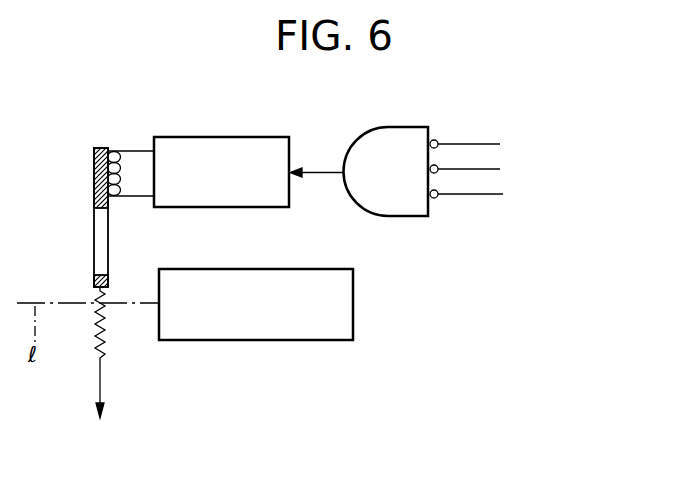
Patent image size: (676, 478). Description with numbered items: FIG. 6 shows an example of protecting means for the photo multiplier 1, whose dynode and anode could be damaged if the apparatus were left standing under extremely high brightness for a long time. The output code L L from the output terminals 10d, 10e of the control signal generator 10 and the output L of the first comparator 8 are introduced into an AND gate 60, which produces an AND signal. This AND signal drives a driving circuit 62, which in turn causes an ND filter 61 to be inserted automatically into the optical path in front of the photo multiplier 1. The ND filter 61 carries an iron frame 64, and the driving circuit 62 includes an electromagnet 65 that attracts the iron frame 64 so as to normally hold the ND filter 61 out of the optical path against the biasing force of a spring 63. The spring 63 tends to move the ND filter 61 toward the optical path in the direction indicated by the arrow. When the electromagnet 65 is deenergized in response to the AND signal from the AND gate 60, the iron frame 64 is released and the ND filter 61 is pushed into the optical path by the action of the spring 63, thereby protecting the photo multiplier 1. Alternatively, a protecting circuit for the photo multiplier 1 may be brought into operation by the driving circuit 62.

The photo multiplier 1 is at (257, 341).
The first comparator 8 is at (479, 195).
The control signal generator 10 is at (507, 157).
The output terminal 10d is at (487, 145).
The output terminal 10e is at (487, 170).
The AND gate 60 is at (400, 205).
The ND filter 61 is at (94, 252).
The driving circuit 62 is at (225, 137).
The spring 63 is at (105, 340).
The iron frame 64 is at (94, 165).
The electromagnet 65 is at (120, 158).